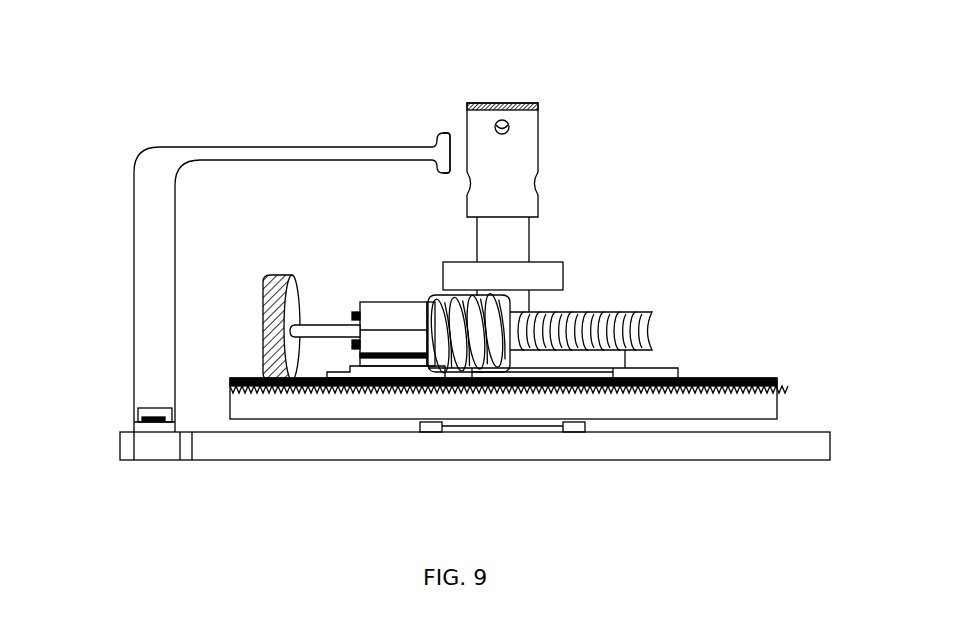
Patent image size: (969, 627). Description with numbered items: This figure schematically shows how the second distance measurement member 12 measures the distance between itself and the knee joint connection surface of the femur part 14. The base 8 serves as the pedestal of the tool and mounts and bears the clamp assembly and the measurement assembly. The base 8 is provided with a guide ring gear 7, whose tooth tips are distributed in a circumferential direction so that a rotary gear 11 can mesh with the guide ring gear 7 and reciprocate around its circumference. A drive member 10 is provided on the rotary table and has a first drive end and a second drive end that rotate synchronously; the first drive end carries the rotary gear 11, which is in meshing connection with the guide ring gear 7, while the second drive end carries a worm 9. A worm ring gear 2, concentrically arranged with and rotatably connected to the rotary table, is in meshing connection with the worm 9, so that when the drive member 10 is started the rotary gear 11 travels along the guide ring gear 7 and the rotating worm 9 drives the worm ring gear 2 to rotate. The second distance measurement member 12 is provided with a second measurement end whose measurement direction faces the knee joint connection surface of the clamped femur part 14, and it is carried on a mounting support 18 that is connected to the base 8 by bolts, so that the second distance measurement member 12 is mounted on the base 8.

The worm ring gear 2 is at (579, 303).
The guide ring gear 7 is at (549, 370).
The base 8 is at (520, 409).
The worm 9 is at (451, 404).
The drive member 10 is at (371, 408).
The rotary gear 11 is at (195, 335).
The second distance measurement member 12 is at (525, 91).
The femur part 14 is at (528, 191).
The mounting support 18 is at (227, 282).